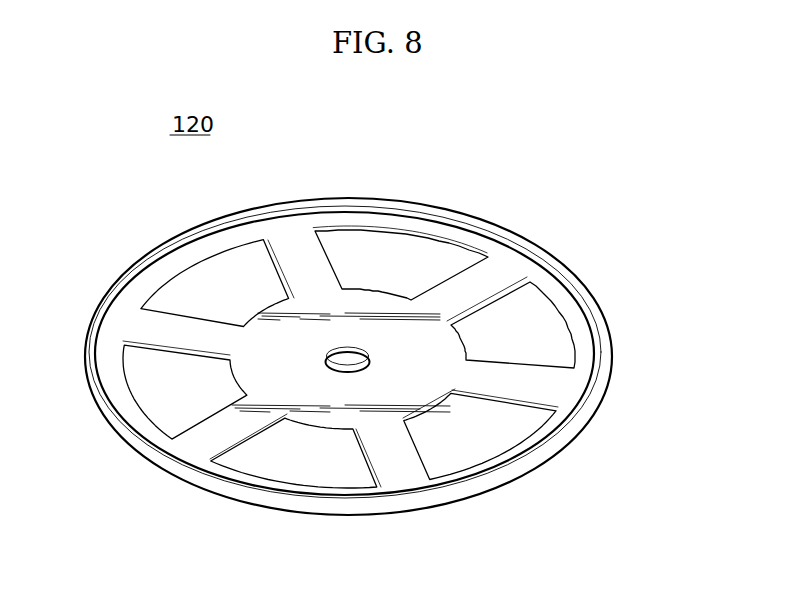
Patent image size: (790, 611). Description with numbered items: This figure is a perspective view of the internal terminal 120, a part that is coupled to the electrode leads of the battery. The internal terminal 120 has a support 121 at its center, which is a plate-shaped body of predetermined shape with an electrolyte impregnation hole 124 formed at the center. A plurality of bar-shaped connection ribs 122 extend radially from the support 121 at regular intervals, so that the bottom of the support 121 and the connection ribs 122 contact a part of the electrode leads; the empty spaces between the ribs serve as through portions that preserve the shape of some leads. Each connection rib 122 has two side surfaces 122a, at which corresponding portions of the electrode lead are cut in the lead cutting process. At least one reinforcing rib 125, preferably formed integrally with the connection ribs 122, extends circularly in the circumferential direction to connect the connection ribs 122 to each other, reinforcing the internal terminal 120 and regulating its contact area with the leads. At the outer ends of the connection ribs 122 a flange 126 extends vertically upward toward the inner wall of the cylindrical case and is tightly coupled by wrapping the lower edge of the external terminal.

The internal terminal 120 is at (396, 263).
The support 121 is at (430, 354).
The connection rib 122 is at (493, 280).
The side surface of the connection rib 122a is at (518, 298).
The electrolyte impregnation hole 124 is at (369, 362).
The reinforcing rib 125 is at (580, 331).
The flange 126 is at (548, 260).